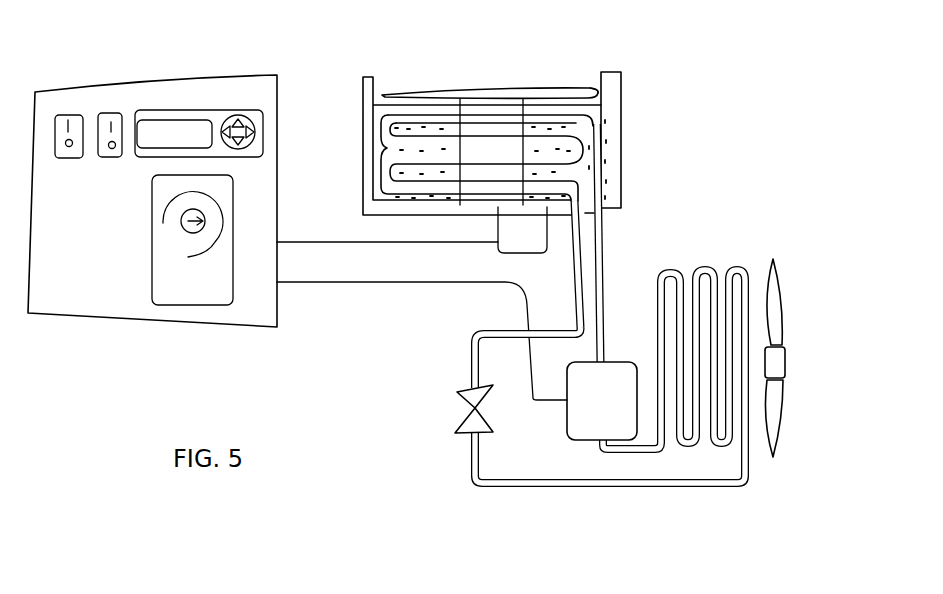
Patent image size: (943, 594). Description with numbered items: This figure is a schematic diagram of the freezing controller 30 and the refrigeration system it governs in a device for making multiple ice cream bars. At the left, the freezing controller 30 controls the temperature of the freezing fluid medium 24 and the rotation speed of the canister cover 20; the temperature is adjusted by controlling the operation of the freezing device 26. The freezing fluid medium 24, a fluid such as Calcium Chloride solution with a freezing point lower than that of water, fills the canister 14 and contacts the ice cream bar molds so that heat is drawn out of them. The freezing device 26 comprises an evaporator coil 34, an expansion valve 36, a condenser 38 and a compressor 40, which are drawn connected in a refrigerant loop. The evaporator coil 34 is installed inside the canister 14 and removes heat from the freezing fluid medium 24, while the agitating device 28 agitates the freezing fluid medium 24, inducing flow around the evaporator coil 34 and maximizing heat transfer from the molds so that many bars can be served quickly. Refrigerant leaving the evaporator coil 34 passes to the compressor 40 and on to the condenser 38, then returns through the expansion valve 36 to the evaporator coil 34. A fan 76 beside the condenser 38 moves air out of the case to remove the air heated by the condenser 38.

The canister 14 is at (626, 113).
The canister cover 20 is at (572, 82).
The freezing fluid medium 24 is at (378, 117).
The freezing device 26 is at (662, 250).
The agitating device 28 is at (457, 79).
The freezing controller 30 is at (87, 320).
The evaporator coil 34 is at (380, 148).
The expansion valve 36 is at (457, 414).
The condenser 38 is at (705, 447).
The compressor 40 is at (587, 442).
The fan 76 is at (773, 259).